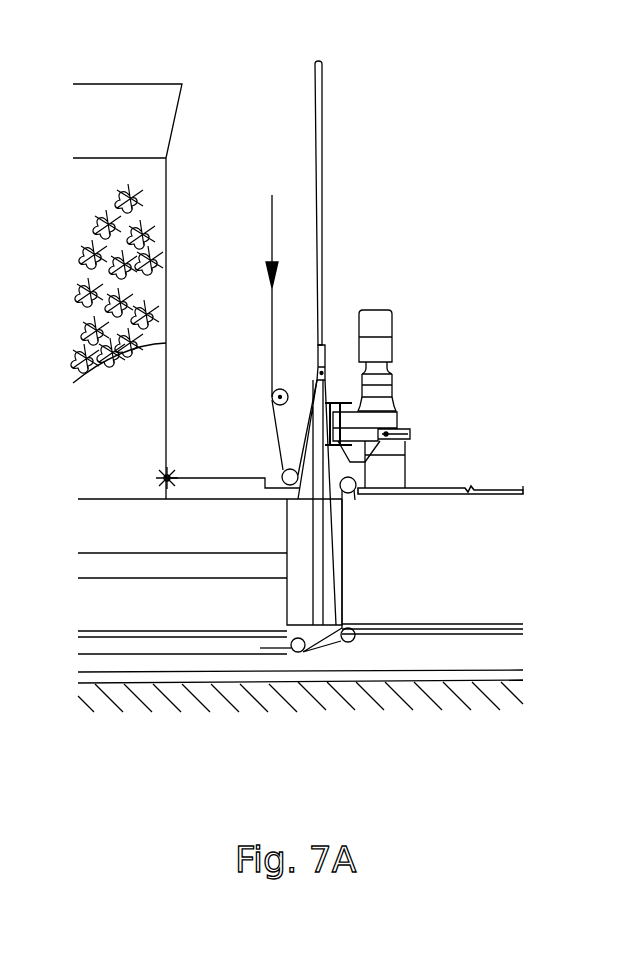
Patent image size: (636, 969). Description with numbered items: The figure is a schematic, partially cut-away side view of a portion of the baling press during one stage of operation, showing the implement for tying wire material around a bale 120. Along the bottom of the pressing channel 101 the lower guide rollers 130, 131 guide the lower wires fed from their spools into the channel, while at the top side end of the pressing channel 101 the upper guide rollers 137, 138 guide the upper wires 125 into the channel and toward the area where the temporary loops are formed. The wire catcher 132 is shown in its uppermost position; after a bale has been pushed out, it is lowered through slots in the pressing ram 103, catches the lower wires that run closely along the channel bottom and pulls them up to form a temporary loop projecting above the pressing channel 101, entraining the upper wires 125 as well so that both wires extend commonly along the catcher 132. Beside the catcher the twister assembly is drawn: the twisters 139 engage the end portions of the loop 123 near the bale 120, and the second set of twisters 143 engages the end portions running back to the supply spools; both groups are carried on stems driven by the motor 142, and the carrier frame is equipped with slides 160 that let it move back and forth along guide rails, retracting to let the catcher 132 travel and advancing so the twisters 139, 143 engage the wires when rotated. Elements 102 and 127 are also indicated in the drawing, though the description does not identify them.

The pressing channel 101 is at (523, 489).
The pit 102 is at (265, 603).
The pressing ram 103 is at (300, 725).
The bale 120 is at (490, 603).
The loop 123 is at (512, 494).
The upper wires 125 is at (272, 325).
The feed direction 127 is at (272, 220).
The lower guide roller 130 is at (296, 652).
The lower guide roller 131 is at (350, 642).
The wire catcher 132 is at (322, 74).
The upper guide roller 137 is at (283, 468).
The upper guide roller 138 is at (352, 490).
The twisters 139 is at (405, 465).
The motor 142 is at (392, 323).
The twisters 143 is at (333, 402).
The slides 160 is at (410, 430).